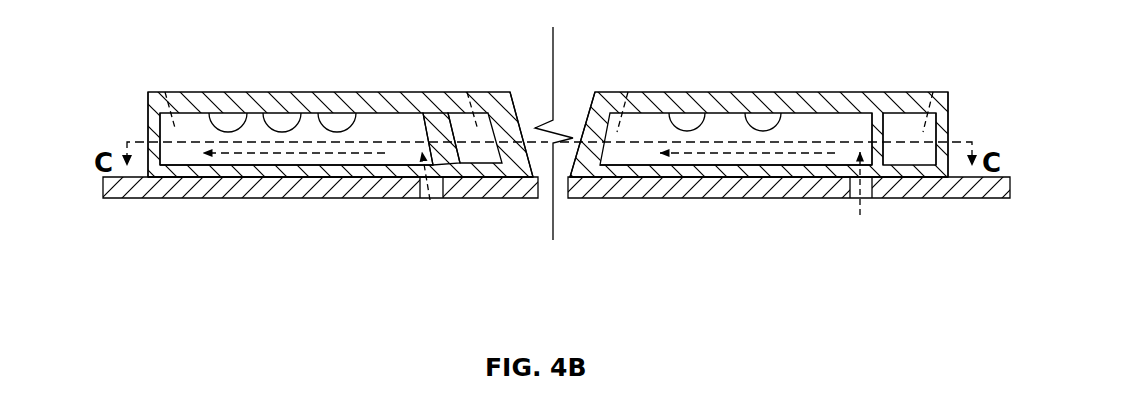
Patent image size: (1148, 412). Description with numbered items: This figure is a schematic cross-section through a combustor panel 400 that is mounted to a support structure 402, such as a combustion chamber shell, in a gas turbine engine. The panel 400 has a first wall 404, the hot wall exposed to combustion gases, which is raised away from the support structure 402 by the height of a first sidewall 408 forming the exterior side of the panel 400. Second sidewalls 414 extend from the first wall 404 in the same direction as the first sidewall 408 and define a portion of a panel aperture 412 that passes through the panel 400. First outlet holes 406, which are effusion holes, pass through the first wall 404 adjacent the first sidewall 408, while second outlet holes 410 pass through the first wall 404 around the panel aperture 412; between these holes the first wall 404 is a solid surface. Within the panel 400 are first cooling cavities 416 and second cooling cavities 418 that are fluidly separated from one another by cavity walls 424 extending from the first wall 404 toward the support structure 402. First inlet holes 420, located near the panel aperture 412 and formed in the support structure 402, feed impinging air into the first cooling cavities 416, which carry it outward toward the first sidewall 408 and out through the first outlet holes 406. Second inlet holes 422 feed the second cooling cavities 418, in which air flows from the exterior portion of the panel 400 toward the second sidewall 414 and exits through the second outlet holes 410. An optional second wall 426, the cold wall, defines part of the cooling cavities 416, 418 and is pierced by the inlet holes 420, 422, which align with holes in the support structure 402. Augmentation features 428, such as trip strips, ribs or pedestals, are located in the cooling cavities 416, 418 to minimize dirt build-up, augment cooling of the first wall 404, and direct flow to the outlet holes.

The panel 400 is at (272, 88).
The support structure 402 is at (178, 195).
The first wall 404 is at (340, 105).
The first outlet holes 406 is at (168, 88).
The first sidewall 408 is at (148, 112).
The second outlet holes 410 is at (470, 88).
The panel aperture 412 is at (568, 65).
The second sidewalls 414 is at (515, 100).
The first cooling cavities 416 is at (302, 133).
The second cooling cavities 418 is at (473, 152).
The first inlet holes 420 is at (428, 213).
The second inlet holes 422 is at (868, 212).
The cavity walls 424 is at (440, 130).
The second wall 426 is at (300, 172).
The augmentation features 428 is at (233, 122).